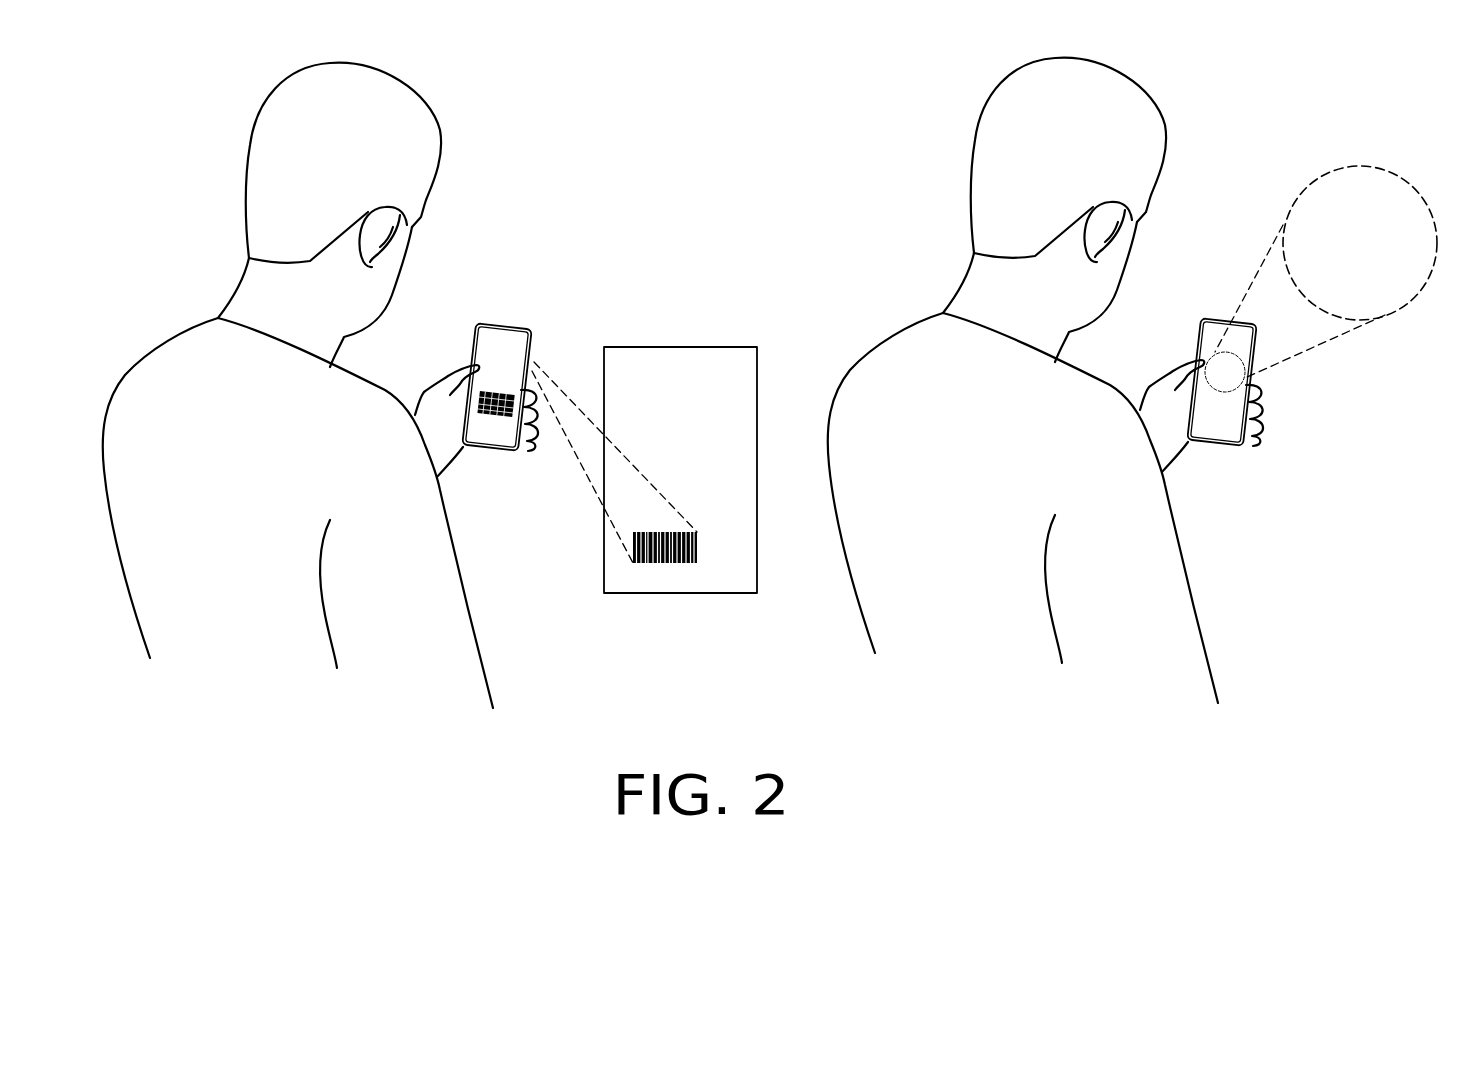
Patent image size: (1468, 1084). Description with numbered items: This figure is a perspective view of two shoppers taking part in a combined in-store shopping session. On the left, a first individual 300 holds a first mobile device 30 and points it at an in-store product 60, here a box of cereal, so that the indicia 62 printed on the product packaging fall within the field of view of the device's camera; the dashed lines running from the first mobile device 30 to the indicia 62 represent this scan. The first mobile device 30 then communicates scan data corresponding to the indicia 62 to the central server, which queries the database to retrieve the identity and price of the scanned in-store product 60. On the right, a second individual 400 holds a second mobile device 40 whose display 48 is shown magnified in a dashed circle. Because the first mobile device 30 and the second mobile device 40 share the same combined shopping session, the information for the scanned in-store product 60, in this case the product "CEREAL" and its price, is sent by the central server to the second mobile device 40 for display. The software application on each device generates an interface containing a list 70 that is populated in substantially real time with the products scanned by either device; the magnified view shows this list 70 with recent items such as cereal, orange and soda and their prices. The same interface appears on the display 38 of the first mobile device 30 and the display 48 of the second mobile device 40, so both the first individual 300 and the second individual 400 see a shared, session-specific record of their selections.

The first individual 300 is at (181, 336).
The first mobile device 30 is at (500, 325).
The display 38 is at (524, 341).
The in-store product 60 is at (655, 347).
The indicia 62 is at (668, 563).
The second individual 400 is at (917, 326).
The second mobile device 40 is at (1228, 321).
The display 48 is at (1224, 435).
The list 70 is at (1358, 166).